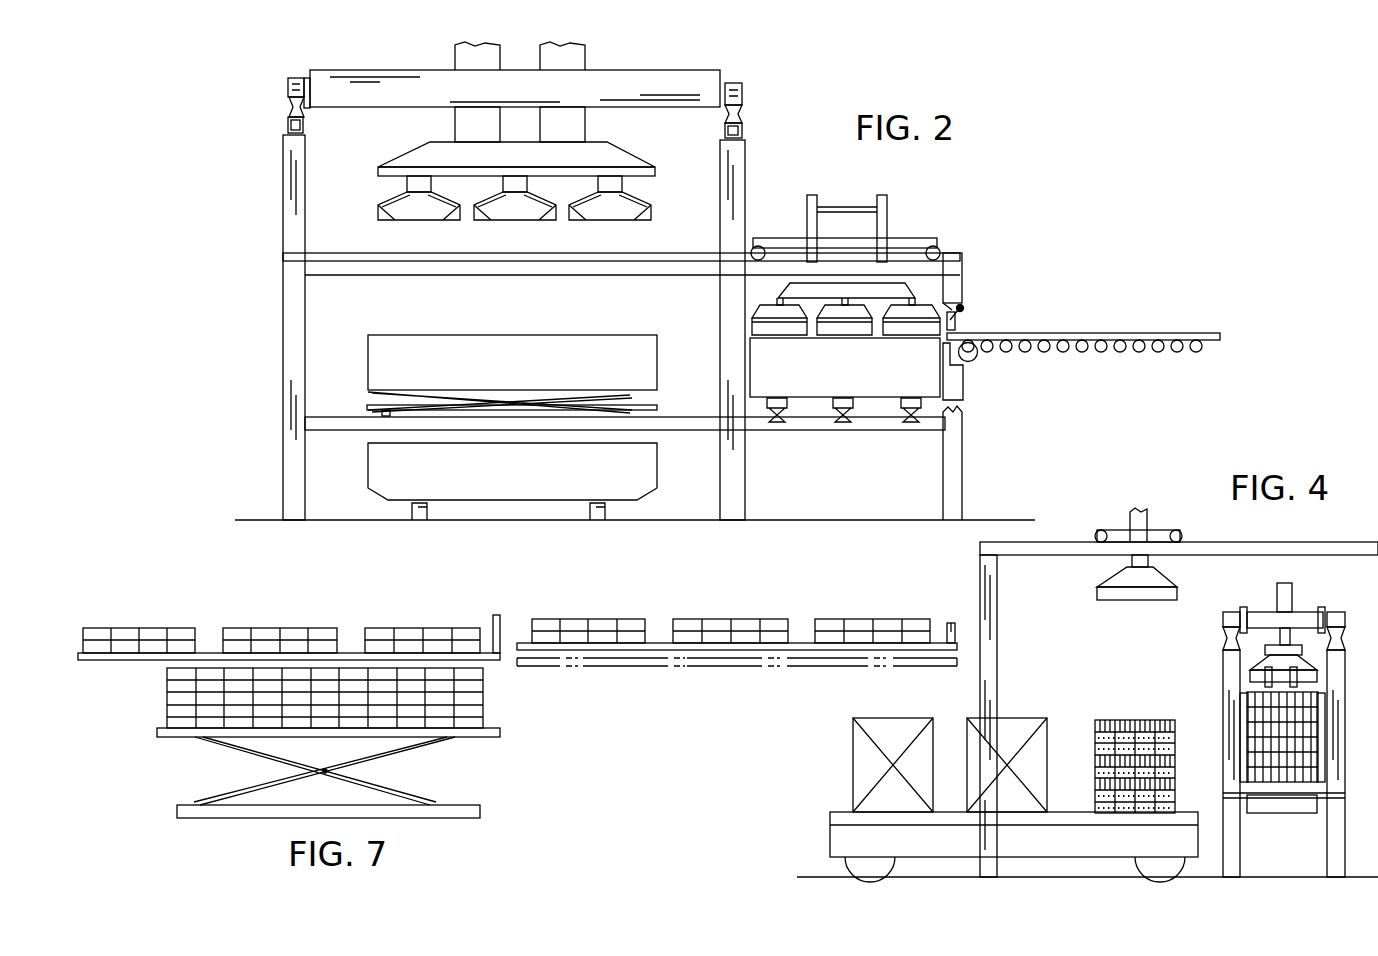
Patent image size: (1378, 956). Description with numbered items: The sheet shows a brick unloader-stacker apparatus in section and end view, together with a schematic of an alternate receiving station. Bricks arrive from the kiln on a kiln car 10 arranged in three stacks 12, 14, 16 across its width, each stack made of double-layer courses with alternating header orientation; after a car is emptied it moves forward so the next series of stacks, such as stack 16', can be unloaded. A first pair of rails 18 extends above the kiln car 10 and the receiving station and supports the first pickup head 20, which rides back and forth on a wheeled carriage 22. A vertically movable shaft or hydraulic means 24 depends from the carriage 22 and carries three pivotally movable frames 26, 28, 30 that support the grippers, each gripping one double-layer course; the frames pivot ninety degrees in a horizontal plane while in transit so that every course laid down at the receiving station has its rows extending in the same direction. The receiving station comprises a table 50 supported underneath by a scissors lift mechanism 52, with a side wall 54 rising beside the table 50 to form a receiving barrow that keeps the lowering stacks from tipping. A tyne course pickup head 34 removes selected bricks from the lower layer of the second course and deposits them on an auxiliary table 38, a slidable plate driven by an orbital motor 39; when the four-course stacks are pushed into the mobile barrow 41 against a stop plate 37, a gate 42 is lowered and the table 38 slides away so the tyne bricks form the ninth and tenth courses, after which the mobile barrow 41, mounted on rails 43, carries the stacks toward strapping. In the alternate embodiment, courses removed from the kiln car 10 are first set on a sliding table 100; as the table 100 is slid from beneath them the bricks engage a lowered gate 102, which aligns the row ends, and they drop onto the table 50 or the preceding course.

In FIG. 2, the kiln car 10 is at (440, 482).
In FIG. 4, the kiln car 10 is at (830, 838).
In FIG. 7, the stack 12 is at (405, 640).
In FIG. 7, the stack 14 is at (290, 636).
In FIG. 7, the stack 16 is at (139, 621).
In FIG. 4, the stack 16 is at (1145, 747).
In FIG. 4, the stack 16' is at (962, 746).
In FIG. 2, the first pair of rails 18 is at (288, 125).
In FIG. 4, the first pair of rails 18 is at (1253, 552).
In FIG. 2, the first pickup head 20 is at (615, 160).
In FIG. 2, the wheeled carriage 22 is at (638, 85).
In FIG. 2, the hydraulic means 24 is at (575, 113).
In FIG. 2, the pivotally movable frame 26 is at (643, 216).
In FIG. 2, the pivotally movable frame 28 is at (505, 216).
In FIG. 2, the pivotally movable frame 30 is at (385, 210).
In FIG. 4, the pivotally movable frame 30 is at (1097, 588).
In FIG. 2, the tyne course pickup head 34 is at (880, 300).
In FIG. 2, the stop plate 37 is at (958, 385).
In FIG. 7, the auxiliary table 38 is at (653, 645).
In FIG. 2, the orbital motor 39 is at (972, 355).
In FIG. 2, the mobile barrow 41 is at (856, 383).
In FIG. 2, the gate 42 is at (955, 305).
In FIG. 4, the gate 42 is at (955, 625).
In FIG. 2, the rails 43 is at (777, 422).
In FIG. 2, the table 50 is at (543, 393).
In FIG. 7, the table 50 is at (498, 733).
In FIG. 2, the scissors lift mechanism 52 is at (538, 400).
In FIG. 7, the scissors lift mechanism 52 is at (408, 753).
In FIG. 2, the side wall 54 is at (528, 372).
In FIG. 7, the sliding table 100 is at (143, 657).
In FIG. 7, the gate 102 is at (498, 627).